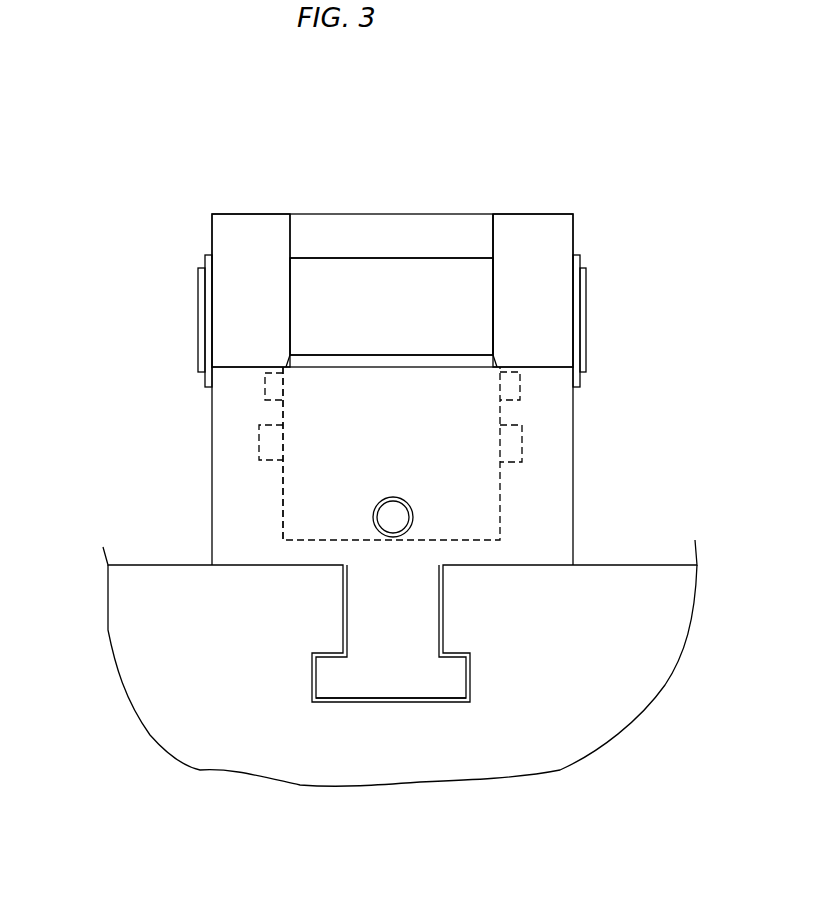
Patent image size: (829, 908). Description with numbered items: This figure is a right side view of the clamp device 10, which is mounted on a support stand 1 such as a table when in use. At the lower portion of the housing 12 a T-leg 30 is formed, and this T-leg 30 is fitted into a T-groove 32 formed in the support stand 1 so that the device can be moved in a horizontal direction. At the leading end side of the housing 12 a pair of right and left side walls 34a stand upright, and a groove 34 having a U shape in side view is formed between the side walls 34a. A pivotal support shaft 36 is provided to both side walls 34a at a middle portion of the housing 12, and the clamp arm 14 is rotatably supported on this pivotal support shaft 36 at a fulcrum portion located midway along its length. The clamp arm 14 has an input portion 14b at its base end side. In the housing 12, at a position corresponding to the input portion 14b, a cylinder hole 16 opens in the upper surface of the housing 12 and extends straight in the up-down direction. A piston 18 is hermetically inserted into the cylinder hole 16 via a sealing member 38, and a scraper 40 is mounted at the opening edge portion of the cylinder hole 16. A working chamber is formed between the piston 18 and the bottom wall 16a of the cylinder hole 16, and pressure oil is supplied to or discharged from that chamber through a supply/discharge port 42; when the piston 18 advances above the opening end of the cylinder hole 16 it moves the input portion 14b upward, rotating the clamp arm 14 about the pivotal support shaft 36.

The support stand 1 is at (190, 705).
The clamp device 10 is at (163, 160).
The housing 12 is at (200, 496).
The clamp arm 14 is at (327, 203).
The input portion 14b is at (385, 282).
The cylinder hole 16 is at (489, 478).
The bottom wall 16a is at (318, 535).
The piston 18 is at (421, 343).
The T-leg 30 is at (385, 678).
The T-groove 32 is at (415, 698).
The groove 34 is at (490, 295).
The side walls 34a is at (253, 214).
The pivotal support shaft 36 is at (587, 322).
The sealing member 38 is at (522, 442).
The scraper 40 is at (520, 387).
The supply/discharge port 42 is at (390, 527).